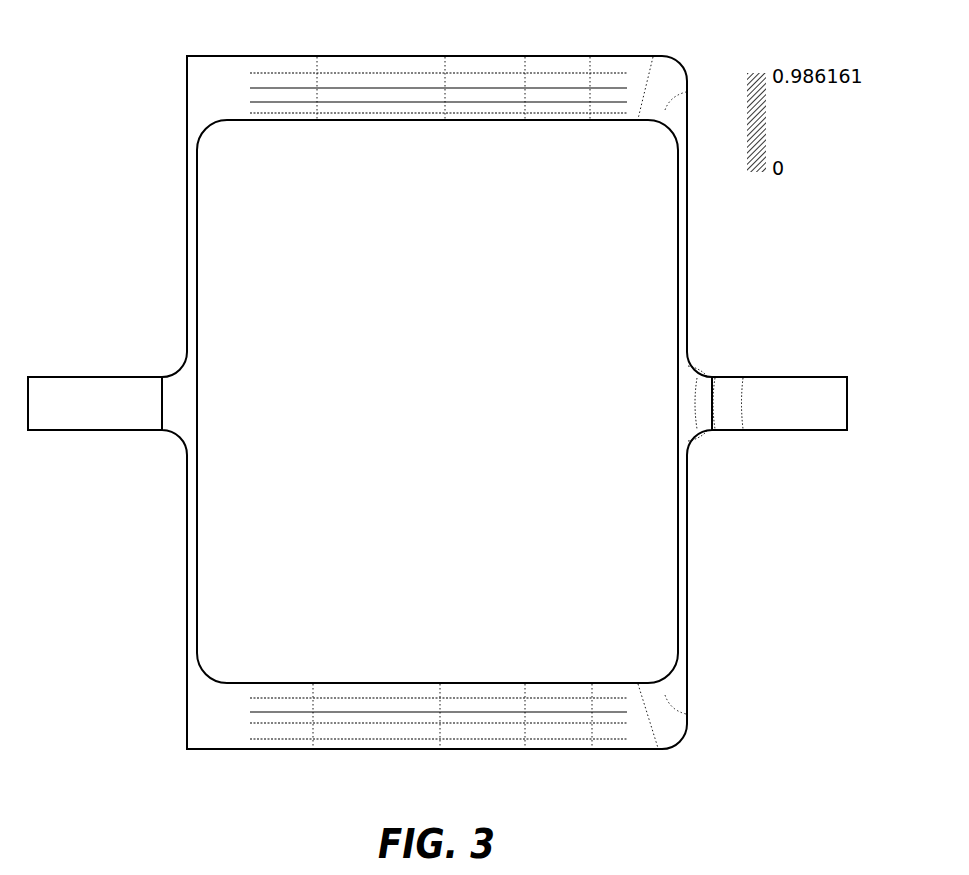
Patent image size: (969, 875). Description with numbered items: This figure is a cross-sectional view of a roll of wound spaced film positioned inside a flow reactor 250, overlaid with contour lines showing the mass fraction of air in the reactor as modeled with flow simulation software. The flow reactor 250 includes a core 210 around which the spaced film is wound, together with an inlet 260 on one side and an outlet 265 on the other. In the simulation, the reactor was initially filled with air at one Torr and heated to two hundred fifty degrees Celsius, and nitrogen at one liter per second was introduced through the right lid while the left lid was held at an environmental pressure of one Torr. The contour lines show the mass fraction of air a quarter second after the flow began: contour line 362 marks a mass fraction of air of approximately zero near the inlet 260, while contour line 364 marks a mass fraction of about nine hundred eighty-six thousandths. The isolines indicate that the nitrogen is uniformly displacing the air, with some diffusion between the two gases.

The core 210 is at (285, 498).
The flow reactor 250 is at (189, 182).
The inlet 260 is at (793, 408).
The outlet 265 is at (102, 407).
The contour line 362 is at (743, 397).
The contour line 364 is at (315, 85).